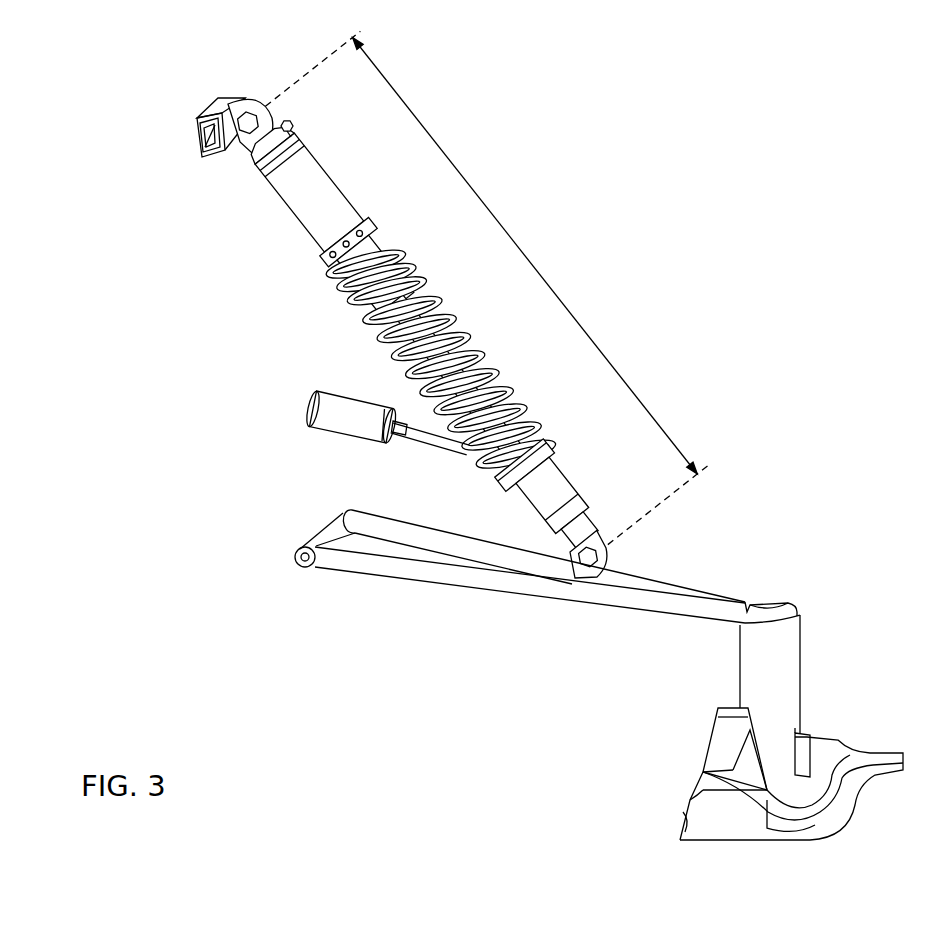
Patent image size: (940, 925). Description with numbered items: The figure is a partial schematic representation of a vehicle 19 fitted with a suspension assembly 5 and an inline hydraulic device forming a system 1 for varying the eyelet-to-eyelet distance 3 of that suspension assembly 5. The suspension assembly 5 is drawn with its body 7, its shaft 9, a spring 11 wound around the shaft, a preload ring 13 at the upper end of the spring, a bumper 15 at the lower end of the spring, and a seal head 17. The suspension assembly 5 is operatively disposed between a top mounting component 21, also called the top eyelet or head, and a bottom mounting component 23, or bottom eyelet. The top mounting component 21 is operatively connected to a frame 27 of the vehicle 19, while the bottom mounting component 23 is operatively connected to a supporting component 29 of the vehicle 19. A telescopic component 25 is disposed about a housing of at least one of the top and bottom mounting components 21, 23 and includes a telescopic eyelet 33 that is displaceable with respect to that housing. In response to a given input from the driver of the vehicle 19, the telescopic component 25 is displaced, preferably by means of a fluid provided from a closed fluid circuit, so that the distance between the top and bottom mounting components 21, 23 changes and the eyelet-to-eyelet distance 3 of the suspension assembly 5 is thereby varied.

The system 1 is at (318, 463).
The eyelet-to-eyelet distance 3 is at (531, 245).
The suspension assembly 5 is at (429, 344).
The body 7 is at (292, 219).
The shaft 9 is at (474, 382).
The spring 11 is at (350, 311).
The preload ring 13 is at (368, 212).
The bumper 15 is at (547, 455).
The seal head 17 is at (455, 337).
The vehicle 19 is at (527, 107).
The top mounting component 21 is at (303, 118).
The bottom mounting component 23 is at (596, 496).
The telescopic component 25 is at (553, 540).
The frame 27 is at (238, 100).
The supporting component 29 is at (868, 718).
The telescopic eyelet 33 is at (616, 554).